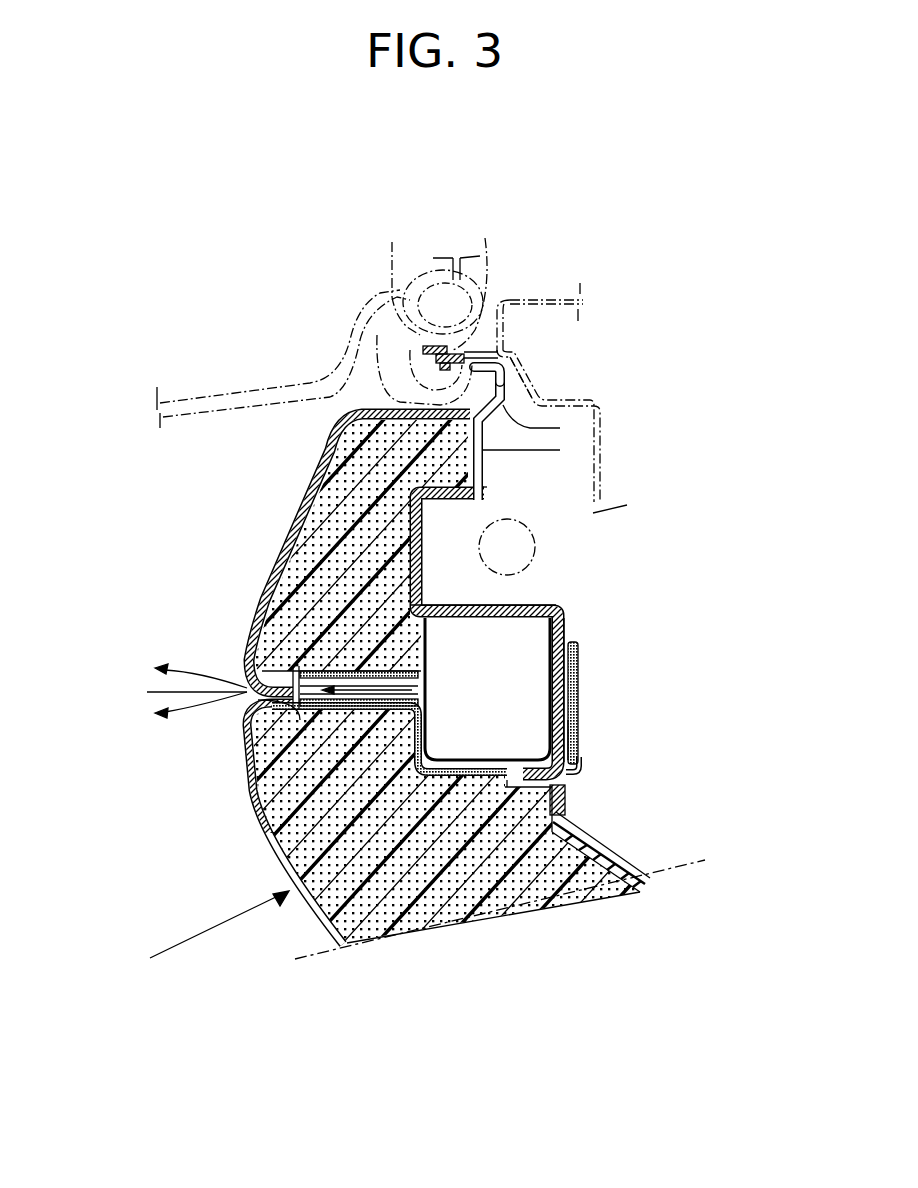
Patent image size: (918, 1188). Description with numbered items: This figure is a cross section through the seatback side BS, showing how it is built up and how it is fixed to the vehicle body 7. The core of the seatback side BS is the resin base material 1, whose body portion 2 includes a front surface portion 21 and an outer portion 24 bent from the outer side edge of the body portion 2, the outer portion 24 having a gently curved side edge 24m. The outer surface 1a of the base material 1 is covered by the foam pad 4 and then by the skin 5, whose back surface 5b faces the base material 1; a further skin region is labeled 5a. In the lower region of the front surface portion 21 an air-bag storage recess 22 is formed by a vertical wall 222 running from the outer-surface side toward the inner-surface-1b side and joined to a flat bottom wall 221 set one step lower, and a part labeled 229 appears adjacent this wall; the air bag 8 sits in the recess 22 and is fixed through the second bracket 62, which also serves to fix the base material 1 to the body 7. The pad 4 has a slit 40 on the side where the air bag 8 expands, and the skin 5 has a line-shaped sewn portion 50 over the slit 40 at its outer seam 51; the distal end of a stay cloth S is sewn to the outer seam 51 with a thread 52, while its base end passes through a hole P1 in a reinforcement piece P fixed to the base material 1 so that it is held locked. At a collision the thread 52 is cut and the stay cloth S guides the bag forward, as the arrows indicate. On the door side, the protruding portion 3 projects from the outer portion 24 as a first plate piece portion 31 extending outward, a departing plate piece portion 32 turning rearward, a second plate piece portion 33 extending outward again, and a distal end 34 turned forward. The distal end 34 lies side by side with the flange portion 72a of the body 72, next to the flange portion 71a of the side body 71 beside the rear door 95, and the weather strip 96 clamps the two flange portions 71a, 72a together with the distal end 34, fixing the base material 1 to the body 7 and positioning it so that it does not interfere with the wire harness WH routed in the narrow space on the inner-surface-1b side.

The pad 4 is at (340, 518).
The skin 5 is at (273, 679).
The upper skin portion 5a is at (262, 586).
The back surface 5b is at (292, 864).
The body portion 2 is at (317, 633).
The front surface portion 21 is at (410, 552).
The air-bag storage recess 22 is at (598, 579).
The vertical wall 222 is at (507, 602).
The flat bottom wall 221 is at (534, 680).
The air bag 8 is at (500, 663).
The second bracket 62 is at (572, 672).
The reinforcement piece P is at (580, 733).
The lower flange 229 is at (565, 786).
The inner surface 1b is at (617, 850).
The base material 1 is at (657, 888).
The outer surface 1a is at (593, 845).
The hole P1 is at (518, 778).
The slit 40 is at (340, 705).
The sewn portion 50 is at (247, 683).
The thread 52 is at (300, 699).
The outer seam 51 is at (310, 702).
The stay cloth S is at (365, 672).
The seatback side BS is at (405, 917).
The outer portion 24 is at (470, 492).
The side edge 24m is at (476, 492).
The second plate piece portion 33 is at (505, 388).
The departing plate piece portion 32 is at (560, 428).
The first plate piece portion 31 is at (560, 450).
The protruding portion 3 is at (383, 281).
The distal end 34 is at (432, 372).
The weather strip 96 is at (392, 242).
The rear door 95 is at (250, 393).
The flange portion 71a is at (485, 238).
The body 7 is at (626, 335).
The side body 71 is at (535, 297).
The body 72 is at (608, 480).
The flange portion 72a is at (530, 383).
The wire harness WH is at (537, 544).